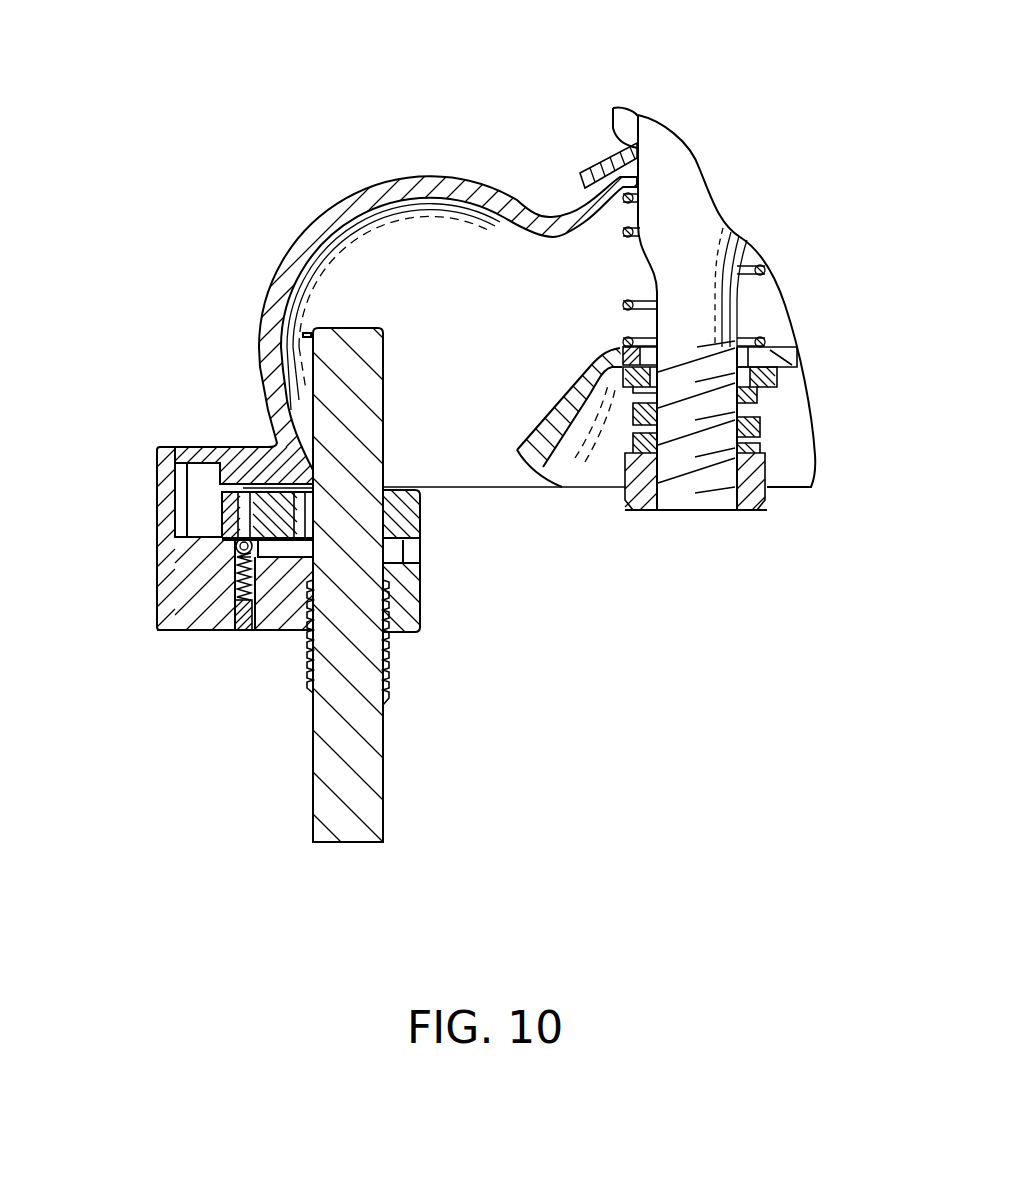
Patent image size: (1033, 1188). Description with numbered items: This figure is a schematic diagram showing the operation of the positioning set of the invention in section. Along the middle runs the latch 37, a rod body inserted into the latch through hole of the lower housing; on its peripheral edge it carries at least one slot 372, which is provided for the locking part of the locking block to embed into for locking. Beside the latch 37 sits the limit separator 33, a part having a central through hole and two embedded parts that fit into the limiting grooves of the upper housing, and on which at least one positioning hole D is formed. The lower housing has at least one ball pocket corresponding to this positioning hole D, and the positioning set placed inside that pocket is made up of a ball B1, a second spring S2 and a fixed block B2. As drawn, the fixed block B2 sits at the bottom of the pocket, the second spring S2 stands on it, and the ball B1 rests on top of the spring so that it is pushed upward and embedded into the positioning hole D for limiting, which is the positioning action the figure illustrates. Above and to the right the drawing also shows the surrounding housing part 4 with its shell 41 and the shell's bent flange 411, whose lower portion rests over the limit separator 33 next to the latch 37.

The housing body 4 is at (488, 155).
The shell 41 is at (385, 184).
The flange of shell 411 is at (227, 478).
The limit separator 33 is at (220, 515).
The latch 37 is at (374, 587).
The slot 372 is at (315, 670).
The positioning hole D is at (157, 596).
The ball B1 is at (238, 553).
The second spring S2 is at (238, 582).
The fixed block B2 is at (243, 630).